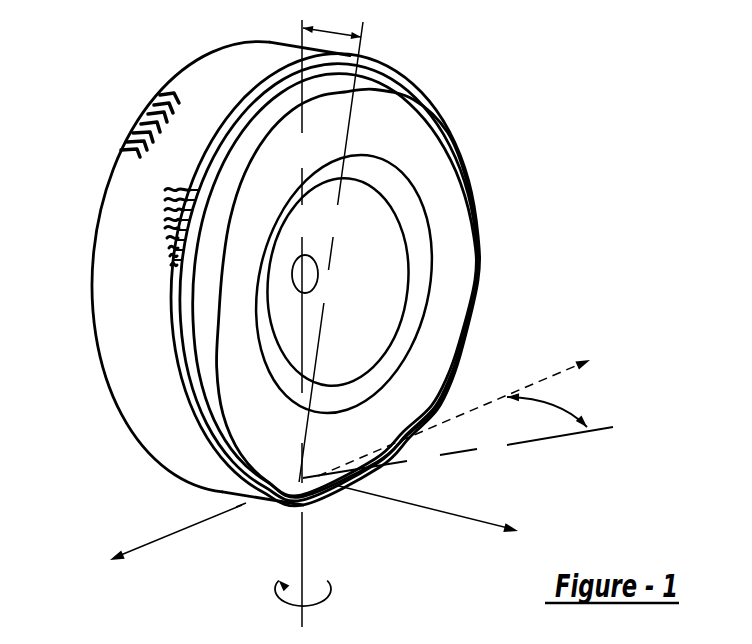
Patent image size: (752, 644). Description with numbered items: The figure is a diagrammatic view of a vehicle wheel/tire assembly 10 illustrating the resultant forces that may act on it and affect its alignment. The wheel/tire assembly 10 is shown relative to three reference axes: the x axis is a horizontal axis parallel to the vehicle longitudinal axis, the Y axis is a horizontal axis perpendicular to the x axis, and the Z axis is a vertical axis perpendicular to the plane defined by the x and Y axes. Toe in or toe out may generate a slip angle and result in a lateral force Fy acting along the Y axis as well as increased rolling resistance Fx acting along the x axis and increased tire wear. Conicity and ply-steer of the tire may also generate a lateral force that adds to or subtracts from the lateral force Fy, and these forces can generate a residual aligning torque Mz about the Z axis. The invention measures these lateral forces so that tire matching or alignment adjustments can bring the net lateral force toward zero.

The wheel/tire assembly 10 is at (444, 128).
The Z axis Z is at (361, 37).
The Y axis Y is at (416, 506).
The lateral force Fy is at (426, 508).
The rolling resistance Fx is at (176, 542).
The X axis x is at (208, 520).
The residual aligning torque Mz is at (317, 603).